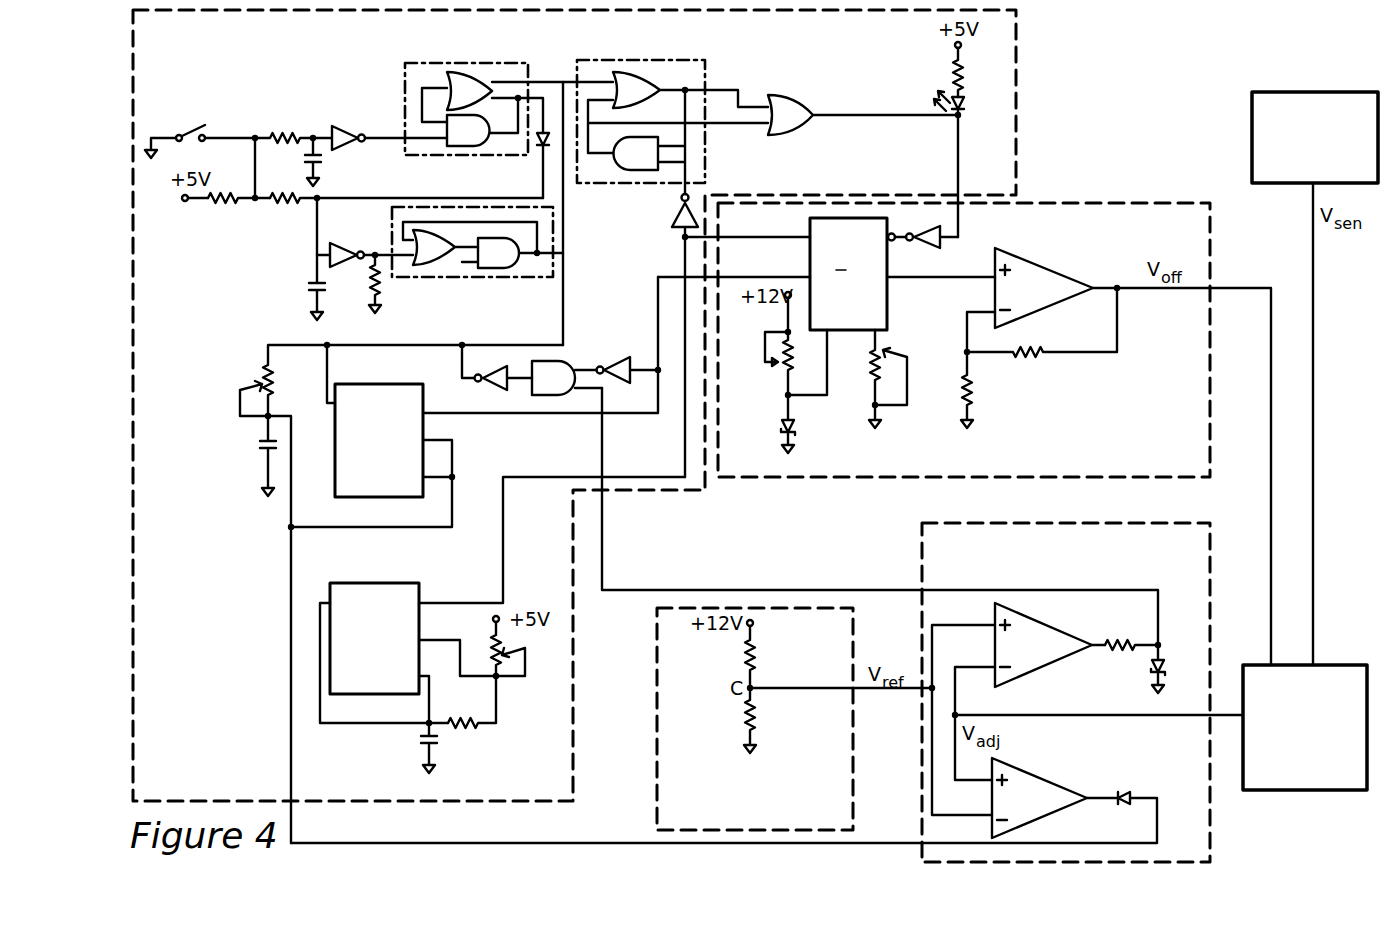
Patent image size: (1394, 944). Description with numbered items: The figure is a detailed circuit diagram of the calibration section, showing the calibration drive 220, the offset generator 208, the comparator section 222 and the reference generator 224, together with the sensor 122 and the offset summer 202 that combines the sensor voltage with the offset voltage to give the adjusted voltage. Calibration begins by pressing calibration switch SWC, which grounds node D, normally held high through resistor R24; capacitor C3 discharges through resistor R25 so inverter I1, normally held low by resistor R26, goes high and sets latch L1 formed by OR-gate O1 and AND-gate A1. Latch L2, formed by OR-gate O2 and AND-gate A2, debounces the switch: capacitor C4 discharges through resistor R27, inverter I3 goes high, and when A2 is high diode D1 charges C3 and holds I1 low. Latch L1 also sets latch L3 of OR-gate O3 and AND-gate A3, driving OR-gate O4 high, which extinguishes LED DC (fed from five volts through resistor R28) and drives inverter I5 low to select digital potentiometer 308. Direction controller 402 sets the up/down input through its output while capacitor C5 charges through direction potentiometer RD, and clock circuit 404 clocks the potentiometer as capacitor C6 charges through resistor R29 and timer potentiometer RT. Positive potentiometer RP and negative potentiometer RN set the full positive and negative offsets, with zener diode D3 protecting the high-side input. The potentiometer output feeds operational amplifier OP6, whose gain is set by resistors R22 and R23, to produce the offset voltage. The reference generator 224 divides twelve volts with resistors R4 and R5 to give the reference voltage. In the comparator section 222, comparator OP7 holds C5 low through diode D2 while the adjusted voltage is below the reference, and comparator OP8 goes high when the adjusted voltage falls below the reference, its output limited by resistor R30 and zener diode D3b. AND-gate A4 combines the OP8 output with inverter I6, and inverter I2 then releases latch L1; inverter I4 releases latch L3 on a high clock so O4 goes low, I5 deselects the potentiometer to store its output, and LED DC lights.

The calibration drive 220 is at (574, 405).
The offset generator 208 is at (964, 340).
The comparator section 222 is at (1066, 692).
The reference generator 224 is at (755, 719).
The offset summer 202 is at (1305, 727).
The sensor 122 is at (1315, 137).
The digital potentiometer 308 is at (890, 294).
The direction controller 402 is at (426, 416).
The clock circuit 404 is at (418, 583).
The calibration switch SWC is at (191, 130).
The resistor R27 is at (289, 126).
The resistor R24 is at (225, 205).
The resistor R25 is at (292, 210).
The resistor R26 is at (384, 288).
The resistor R28 is at (950, 80).
The resistor R22 is at (1033, 356).
The resistor R23 is at (977, 392).
The resistor R29 is at (470, 730).
The resistor R30 is at (1114, 650).
The resistor R4 is at (760, 659).
The resistor R5 is at (762, 714).
The direction potentiometer RD is at (401, 380).
The timer potentiometer RT is at (486, 643).
The positive potentiometer RP is at (778, 366).
The negative potentiometer RN is at (866, 373).
The capacitor C3 is at (308, 288).
The capacitor C4 is at (325, 165).
The capacitor C5 is at (262, 464).
The capacitor C6 is at (418, 742).
The node D is at (256, 183).
The diode D1 is at (542, 158).
The diode D2 is at (1120, 794).
The zener diode D3 is at (779, 428).
The zener diode D3b is at (1151, 675).
The calibration LED DC is at (963, 164).
The inverter I1 is at (339, 246).
The inverter I2 is at (486, 382).
The inverter I3 is at (361, 125).
The inverter I4 is at (670, 222).
The inverter I5 is at (938, 246).
The inverter I6 is at (636, 358).
The OR-gate O1 is at (470, 243).
The OR-gate O2 is at (517, 102).
The OR-gate O3 is at (678, 112).
The OR-gate O4 is at (863, 115).
The AND-gate A1 is at (512, 253).
The AND-gate A2 is at (482, 122).
The AND-gate A3 is at (650, 142).
The AND-gate A4 is at (567, 378).
The latch L1 is at (538, 283).
The latch L2 is at (406, 63).
The latch L3 is at (628, 184).
The operational amplifier OP6 is at (1133, 456).
The comparator OP7 is at (1055, 798).
The comparator OP8 is at (1018, 709).